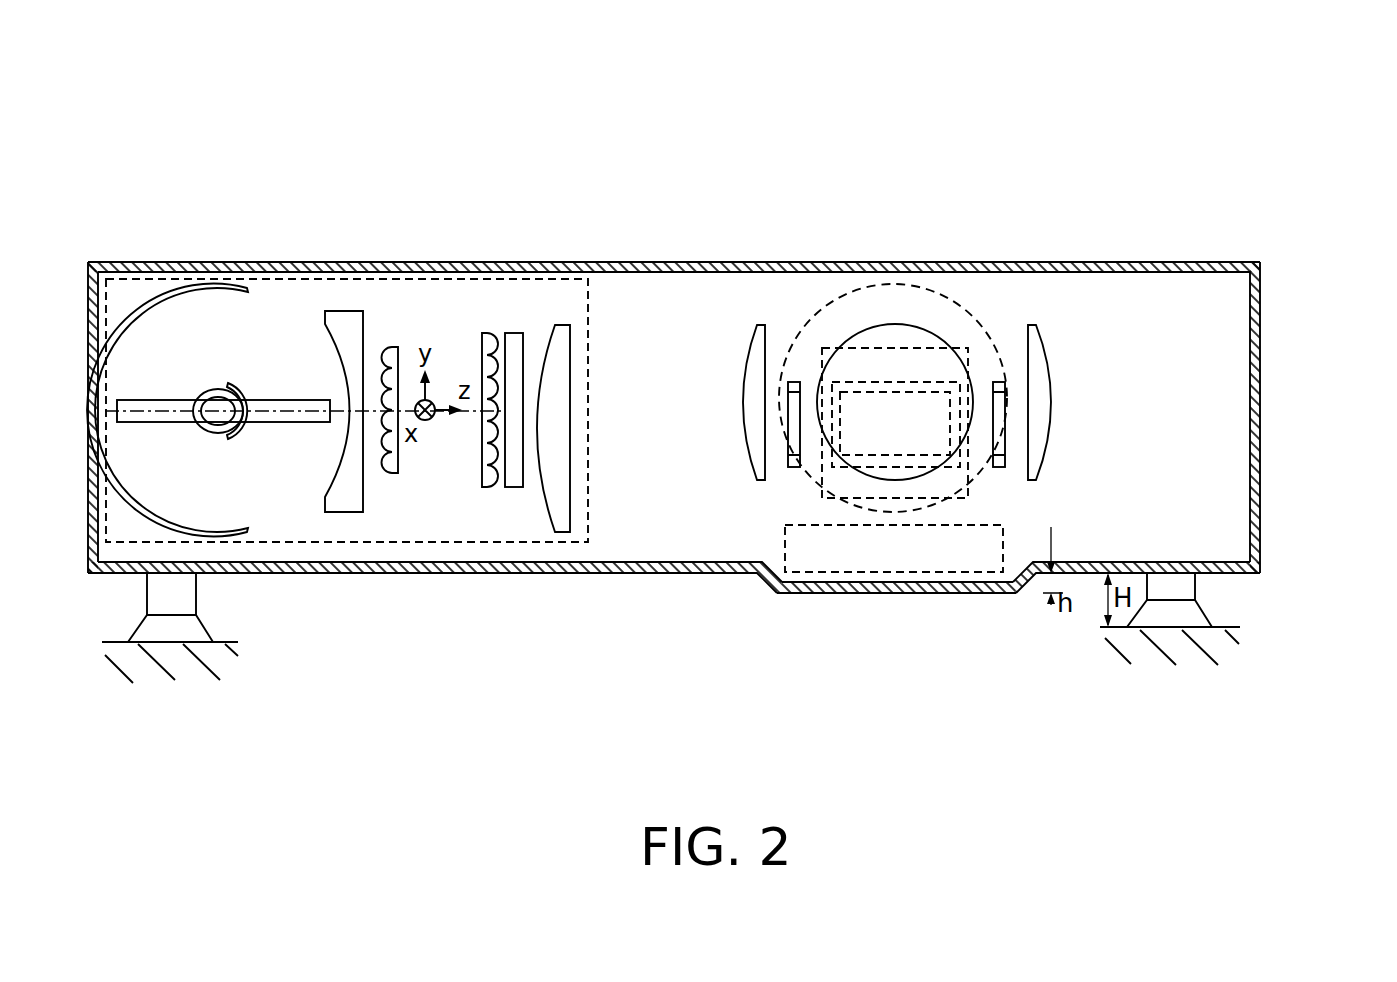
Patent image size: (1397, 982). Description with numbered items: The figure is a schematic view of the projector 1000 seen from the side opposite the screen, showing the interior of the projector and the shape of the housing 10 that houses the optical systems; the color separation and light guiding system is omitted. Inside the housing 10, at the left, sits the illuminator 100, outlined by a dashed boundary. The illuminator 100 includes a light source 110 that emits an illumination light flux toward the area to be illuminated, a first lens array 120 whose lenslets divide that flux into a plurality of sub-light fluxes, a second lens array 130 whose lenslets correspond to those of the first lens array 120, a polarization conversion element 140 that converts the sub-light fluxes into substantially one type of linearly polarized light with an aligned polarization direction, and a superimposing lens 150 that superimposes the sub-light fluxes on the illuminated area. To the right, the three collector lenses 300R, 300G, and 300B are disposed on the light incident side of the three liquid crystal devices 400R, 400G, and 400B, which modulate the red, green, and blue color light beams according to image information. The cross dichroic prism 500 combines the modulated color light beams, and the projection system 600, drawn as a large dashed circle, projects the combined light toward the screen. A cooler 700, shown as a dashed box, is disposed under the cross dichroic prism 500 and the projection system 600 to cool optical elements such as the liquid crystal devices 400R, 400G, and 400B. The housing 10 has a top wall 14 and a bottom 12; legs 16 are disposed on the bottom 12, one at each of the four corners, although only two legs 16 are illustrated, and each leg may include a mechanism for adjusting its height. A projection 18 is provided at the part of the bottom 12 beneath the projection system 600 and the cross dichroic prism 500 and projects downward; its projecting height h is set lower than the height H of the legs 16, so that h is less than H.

The housing 10 is at (1282, 273).
The bottom 12 is at (697, 574).
The top surface of housing 14 is at (666, 262).
The legs 16 is at (196, 592).
The projection 18 is at (899, 606).
The illuminator 100 is at (615, 200).
The light source 110 is at (176, 305).
The first lens array 120 is at (390, 343).
The second lens array 130 is at (483, 327).
The polarization conversion element 140 is at (512, 333).
The superimposing lens 150 is at (560, 325).
The collector lens 300R is at (762, 325).
The collector lens 300G is at (866, 330).
The collector lens 300B is at (1040, 325).
The liquid crystal device 400R is at (791, 468).
The liquid crystal device 400G is at (853, 382).
The liquid crystal device 400B is at (998, 382).
The cross dichroic prism 500 is at (921, 348).
The projection system 600 is at (903, 283).
The cooler 700 is at (1003, 525).
The projector 1000 is at (1305, 112).